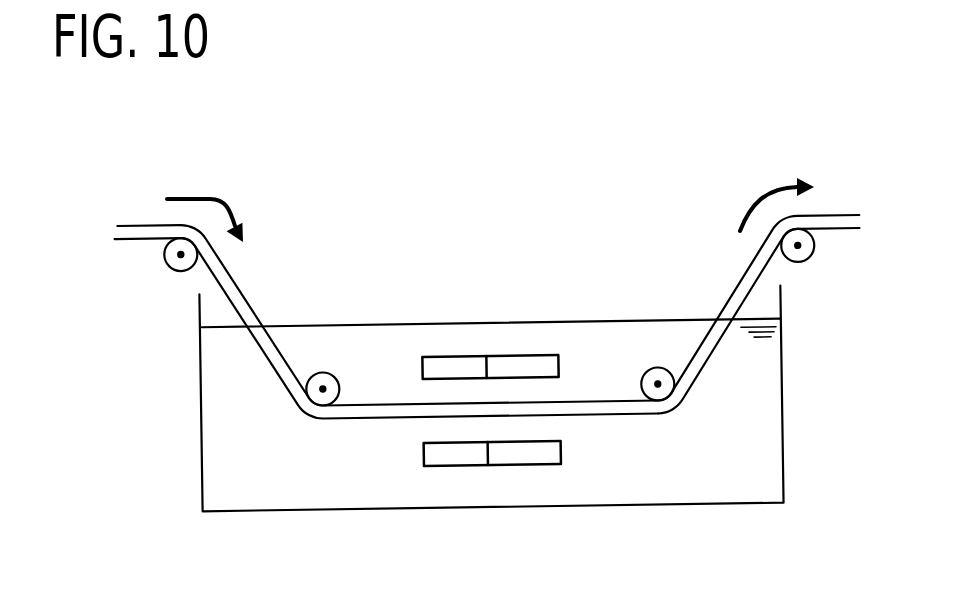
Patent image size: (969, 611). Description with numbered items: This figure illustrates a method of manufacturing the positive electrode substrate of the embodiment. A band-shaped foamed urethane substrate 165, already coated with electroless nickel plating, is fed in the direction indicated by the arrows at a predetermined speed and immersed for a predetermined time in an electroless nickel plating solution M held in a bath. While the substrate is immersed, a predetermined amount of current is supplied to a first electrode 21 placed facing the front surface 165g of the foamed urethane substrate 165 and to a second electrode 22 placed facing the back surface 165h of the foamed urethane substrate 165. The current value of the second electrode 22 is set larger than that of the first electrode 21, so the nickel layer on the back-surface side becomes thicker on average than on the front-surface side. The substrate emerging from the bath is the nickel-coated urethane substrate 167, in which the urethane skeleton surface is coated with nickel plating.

The foamed urethane substrate 165 is at (230, 283).
The front surface 165g is at (147, 226).
The back surface 165h is at (138, 242).
The nickel-coated urethane substrate 167 is at (750, 272).
The first electrode 21 is at (528, 367).
The second electrode 22 is at (529, 453).
The electroless nickel plating solution M is at (759, 457).